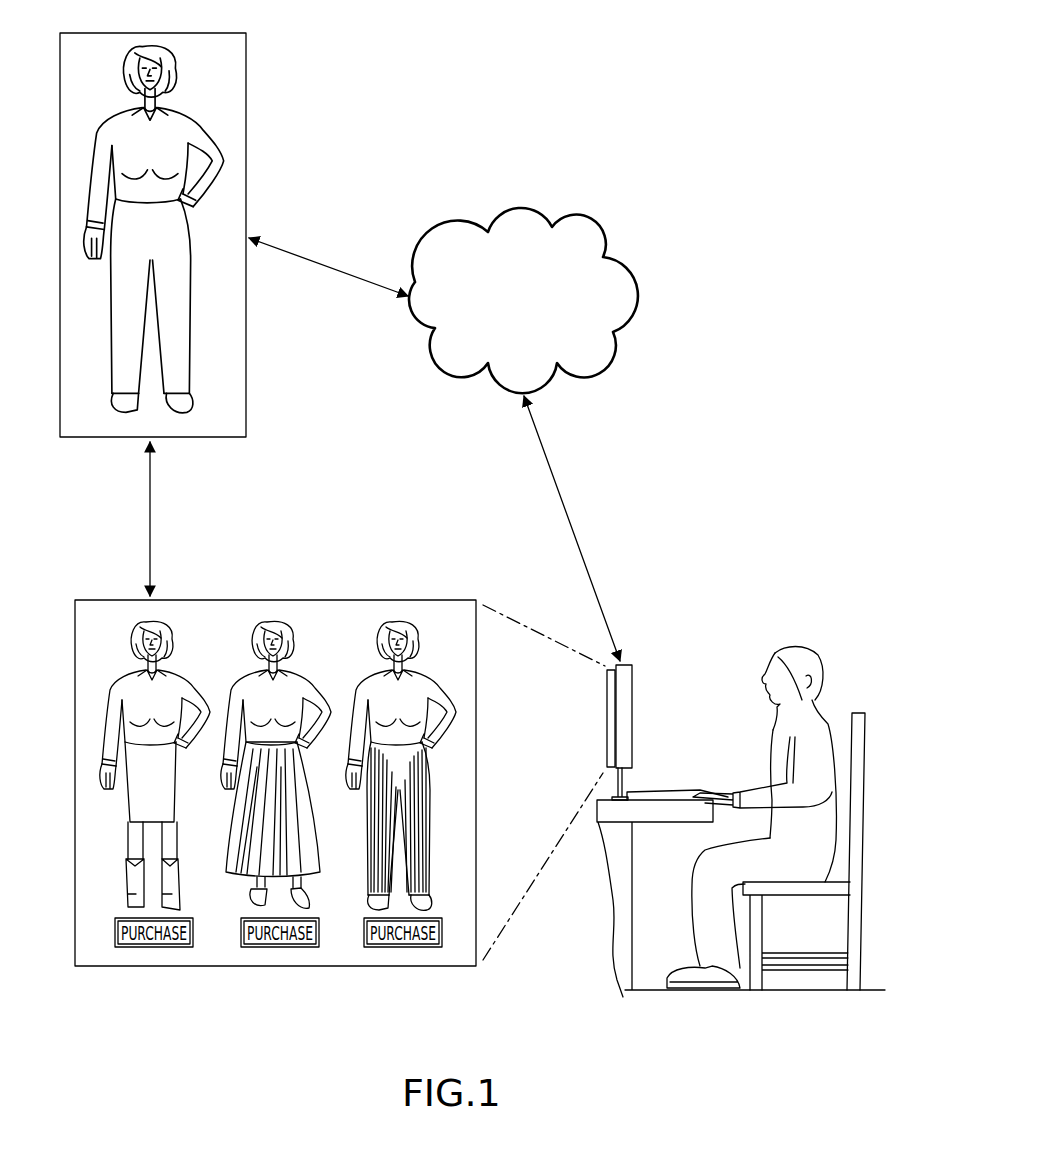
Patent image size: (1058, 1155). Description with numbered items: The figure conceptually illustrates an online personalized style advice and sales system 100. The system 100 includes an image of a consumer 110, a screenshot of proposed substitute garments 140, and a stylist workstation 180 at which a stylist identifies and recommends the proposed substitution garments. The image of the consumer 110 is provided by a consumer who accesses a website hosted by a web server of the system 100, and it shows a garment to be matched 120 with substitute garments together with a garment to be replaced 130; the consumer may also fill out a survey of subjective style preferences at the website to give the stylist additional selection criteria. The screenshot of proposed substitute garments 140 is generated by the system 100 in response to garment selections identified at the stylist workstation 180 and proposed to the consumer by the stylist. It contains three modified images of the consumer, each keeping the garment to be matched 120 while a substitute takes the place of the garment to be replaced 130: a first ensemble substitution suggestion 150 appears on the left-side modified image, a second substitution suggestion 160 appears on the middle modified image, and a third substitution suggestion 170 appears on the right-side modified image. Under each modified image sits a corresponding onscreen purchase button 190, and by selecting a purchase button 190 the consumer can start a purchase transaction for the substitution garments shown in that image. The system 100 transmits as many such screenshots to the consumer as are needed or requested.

The online personalized style advice and sales system 100 is at (527, 112).
The image of a consumer 110 is at (246, 78).
The garment to be matched 120 is at (206, 150).
The garment to be replaced 130 is at (188, 336).
The screenshot of proposed substitute garments 140 is at (342, 600).
The first ensemble substitution suggestion 150 is at (125, 797).
The second substitution suggestion 160 is at (318, 812).
The third substitution suggestion 170 is at (428, 825).
The stylist workstation 180 is at (701, 680).
The onscreen purchase button 190 is at (152, 950).